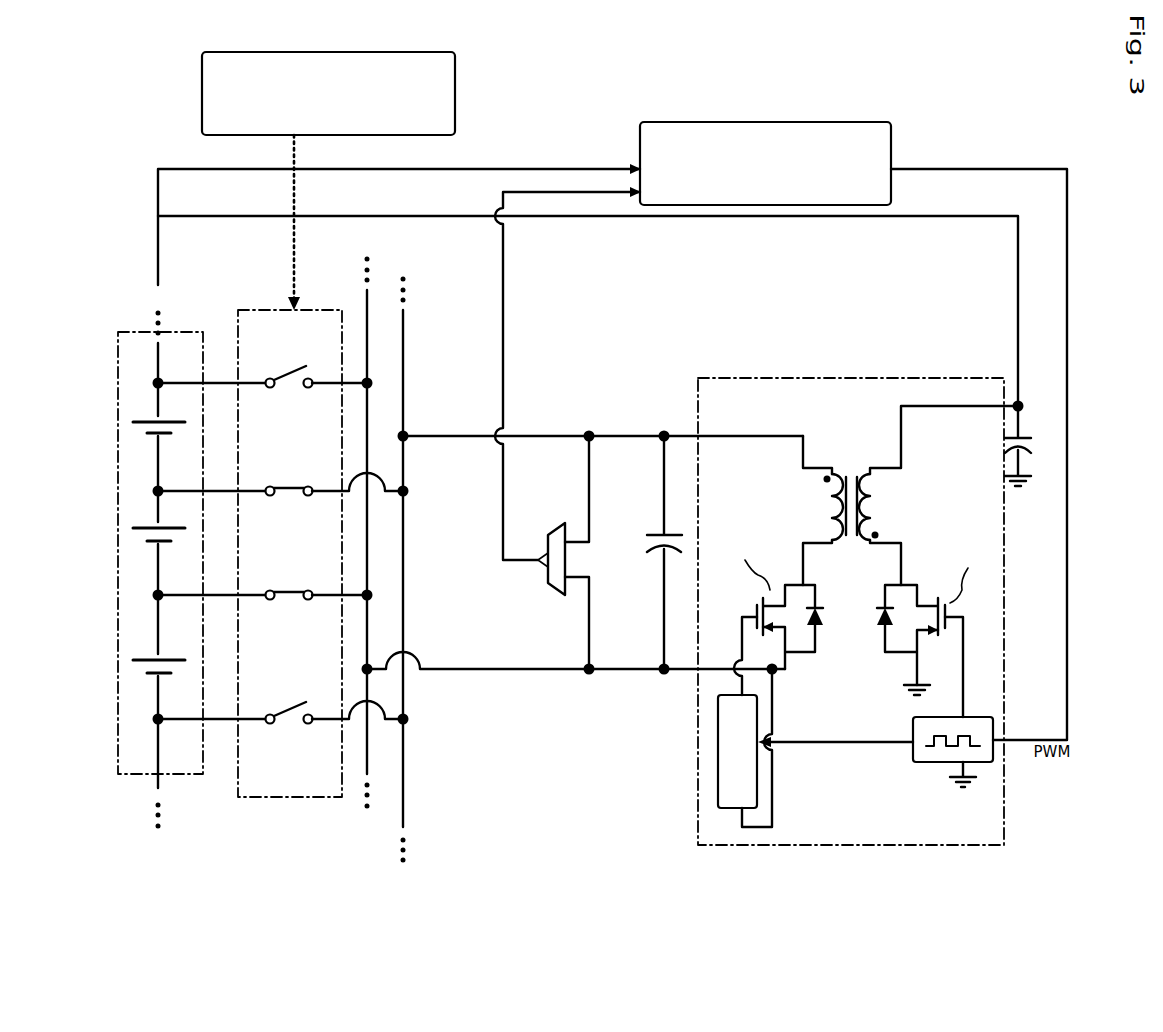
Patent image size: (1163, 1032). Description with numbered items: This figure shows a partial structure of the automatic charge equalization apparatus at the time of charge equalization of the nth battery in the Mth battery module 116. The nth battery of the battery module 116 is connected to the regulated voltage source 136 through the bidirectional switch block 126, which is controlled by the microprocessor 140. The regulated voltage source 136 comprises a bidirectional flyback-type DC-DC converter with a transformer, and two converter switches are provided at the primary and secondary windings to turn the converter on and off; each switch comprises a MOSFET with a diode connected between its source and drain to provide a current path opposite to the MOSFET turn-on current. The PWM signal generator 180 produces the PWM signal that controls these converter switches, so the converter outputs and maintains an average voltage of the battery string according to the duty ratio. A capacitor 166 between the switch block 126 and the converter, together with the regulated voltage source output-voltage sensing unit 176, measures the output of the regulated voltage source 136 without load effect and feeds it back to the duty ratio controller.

The Mth battery module 116 is at (128, 330).
The bidirectional switch block 126 is at (264, 308).
The regulated voltage source 136 is at (858, 589).
The microprocessor 140 is at (386, 52).
The capacitor 166 is at (645, 535).
The regulated voltage source output-voltage sensing unit 176 is at (553, 525).
The PWM signal generator 180 is at (703, 120).